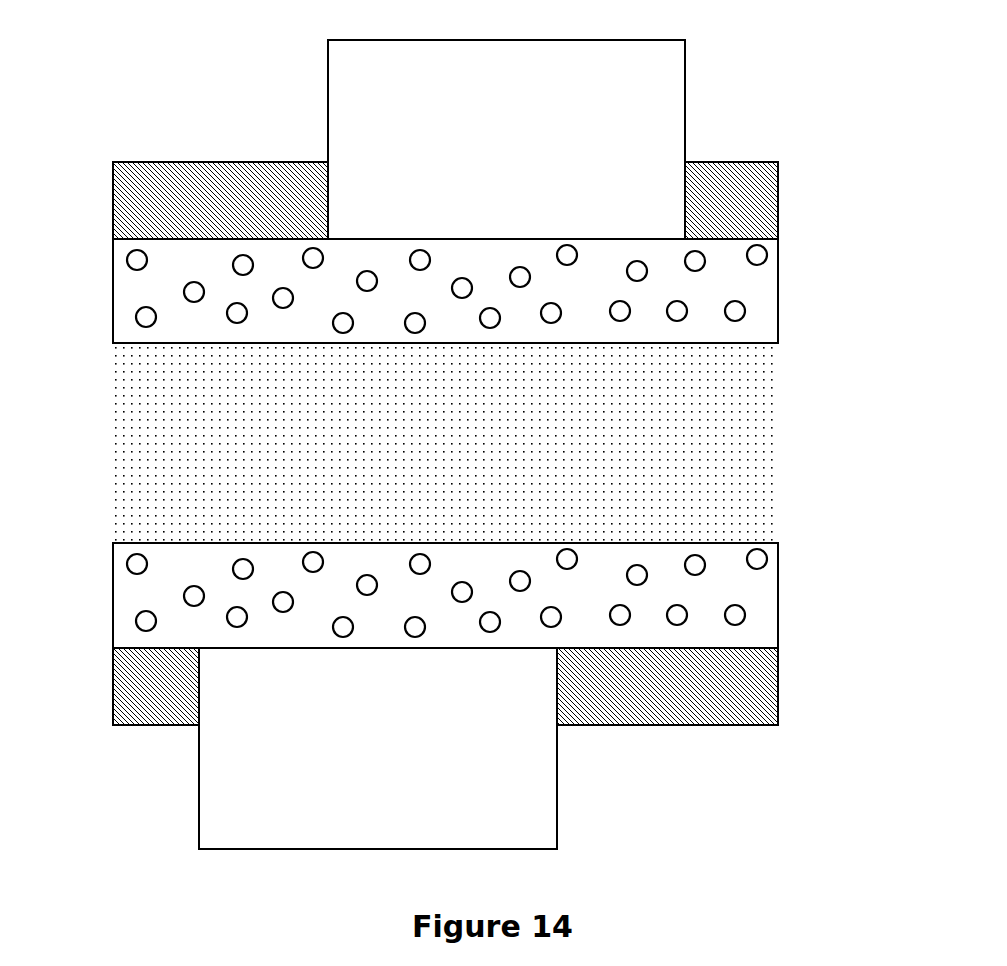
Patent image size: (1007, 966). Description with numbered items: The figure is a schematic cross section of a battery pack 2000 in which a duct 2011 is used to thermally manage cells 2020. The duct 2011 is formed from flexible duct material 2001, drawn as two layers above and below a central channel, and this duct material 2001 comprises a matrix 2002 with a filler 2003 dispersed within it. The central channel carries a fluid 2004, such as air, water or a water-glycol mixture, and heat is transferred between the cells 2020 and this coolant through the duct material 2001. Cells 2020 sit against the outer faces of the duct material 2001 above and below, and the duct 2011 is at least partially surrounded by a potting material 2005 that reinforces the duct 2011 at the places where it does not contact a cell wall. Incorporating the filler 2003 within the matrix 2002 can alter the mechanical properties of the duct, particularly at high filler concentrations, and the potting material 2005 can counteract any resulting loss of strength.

The battery pack 2000 is at (205, 127).
The flexible duct material 2001 is at (113, 344).
The matrix 2002 is at (122, 295).
The filler 2003 is at (127, 260).
The fluid 2004 is at (475, 451).
The potting material 2005 is at (122, 196).
The duct 2011 is at (783, 243).
The cells 2020 is at (525, 162).